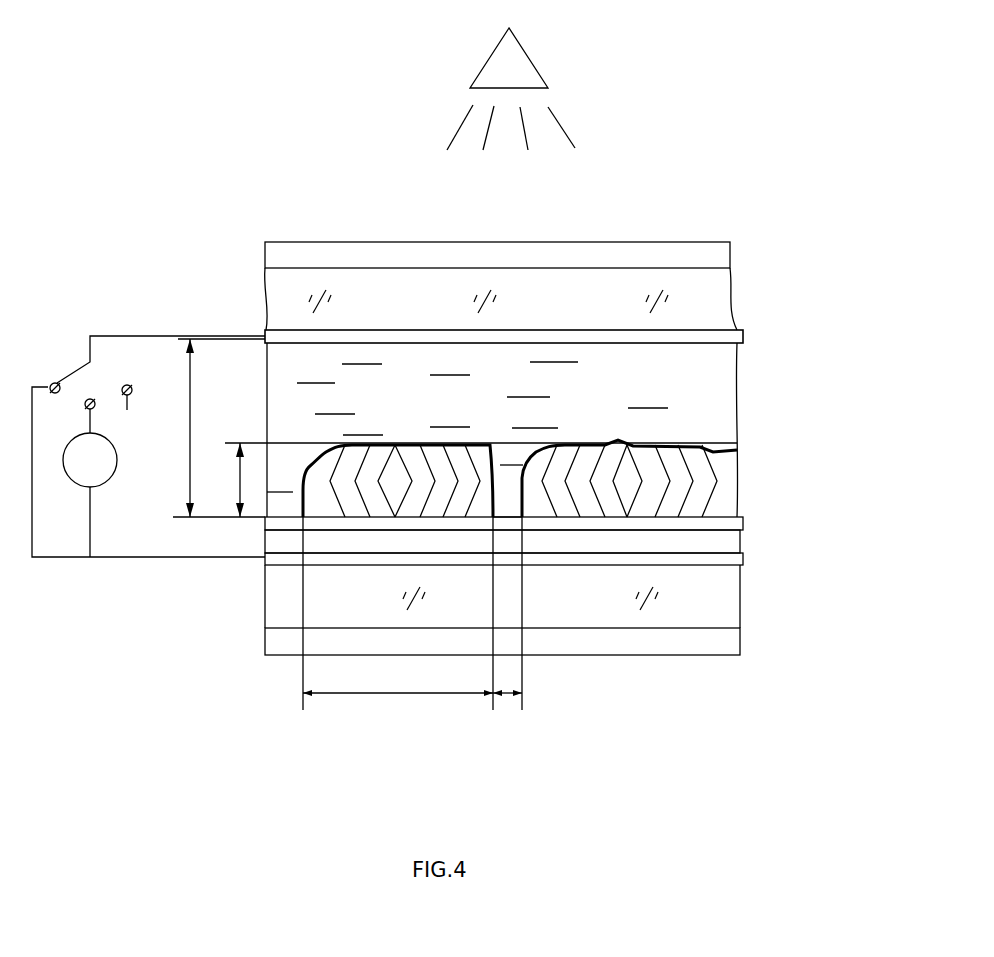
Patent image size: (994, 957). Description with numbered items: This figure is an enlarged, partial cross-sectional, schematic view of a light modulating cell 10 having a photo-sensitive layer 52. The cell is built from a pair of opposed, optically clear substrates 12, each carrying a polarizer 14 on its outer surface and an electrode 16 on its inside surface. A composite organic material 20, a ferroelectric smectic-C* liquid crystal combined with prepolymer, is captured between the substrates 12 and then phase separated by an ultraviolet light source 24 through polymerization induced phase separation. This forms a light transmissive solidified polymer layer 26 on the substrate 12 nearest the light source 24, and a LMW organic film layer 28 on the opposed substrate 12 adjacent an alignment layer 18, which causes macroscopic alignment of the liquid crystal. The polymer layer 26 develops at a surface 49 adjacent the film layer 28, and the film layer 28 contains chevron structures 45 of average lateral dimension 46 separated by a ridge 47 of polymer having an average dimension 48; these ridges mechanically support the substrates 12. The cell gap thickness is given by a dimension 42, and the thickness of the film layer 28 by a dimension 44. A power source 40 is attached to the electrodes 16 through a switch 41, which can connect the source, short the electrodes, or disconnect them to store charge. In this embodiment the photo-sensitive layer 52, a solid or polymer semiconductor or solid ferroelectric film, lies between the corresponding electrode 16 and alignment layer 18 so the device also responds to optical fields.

The light modulating cell 10 is at (665, 165).
The substrate 12 is at (567, 471).
The polarizer 14 is at (567, 457).
The electrode 16 is at (549, 469).
The alignment layer 18 is at (562, 538).
The composite organic material 20 is at (843, 345).
The ultraviolet light source 24 is at (548, 67).
The light transmissive solidified polymer layer 26 is at (790, 345).
The LMW organic film layer 28 is at (760, 443).
The power source 40 is at (111, 471).
The switch 41 is at (68, 367).
The cell gap thickness dimension 42 is at (192, 380).
The thickness dimension of LMW organic film layer 44 is at (237, 483).
The chevron structure 45 is at (400, 486).
The average lateral dimension 46 is at (398, 634).
The ridge 47 is at (514, 474).
The average dimension of ridge 48 is at (531, 629).
The surface 49 is at (653, 457).
The photo-sensitive layer 52 is at (557, 566).